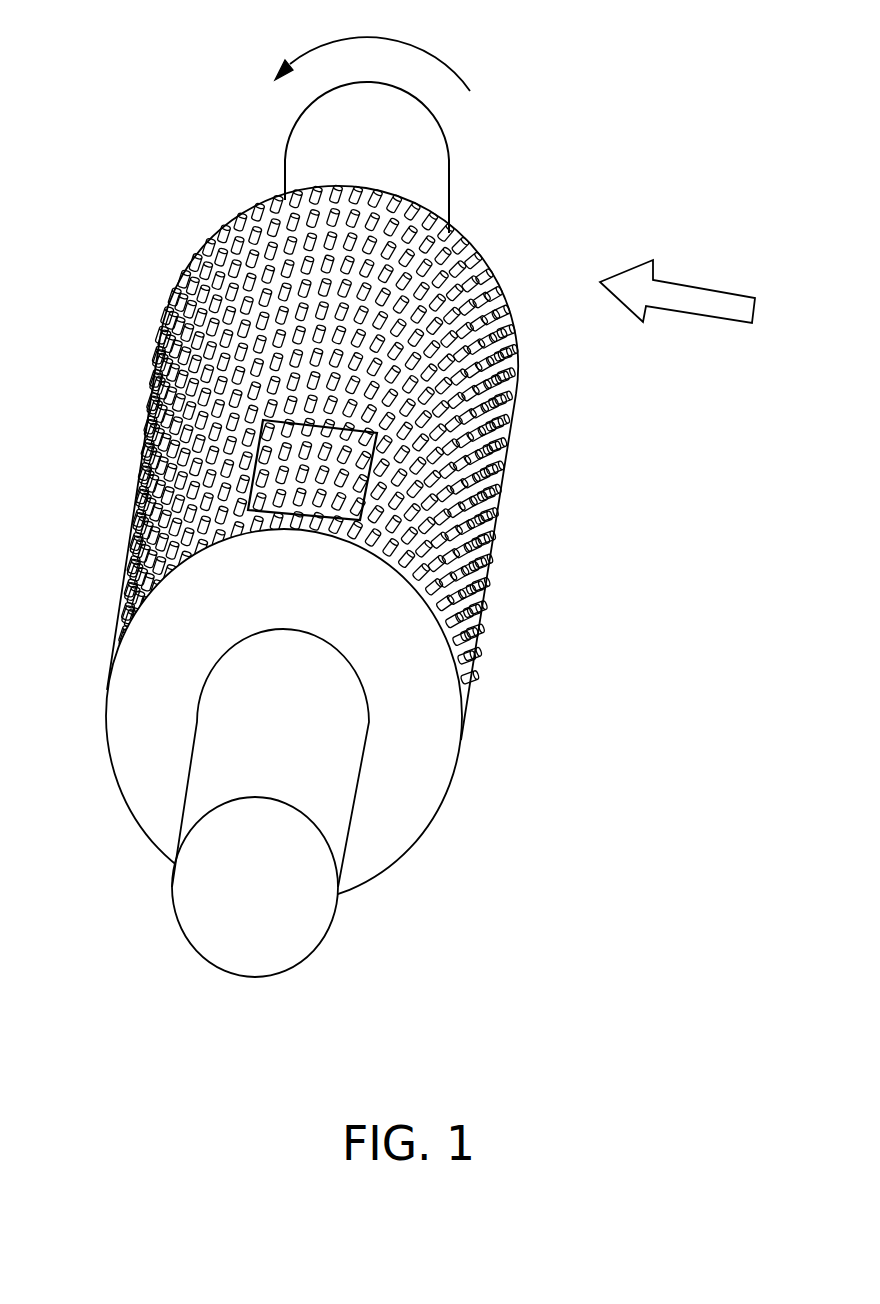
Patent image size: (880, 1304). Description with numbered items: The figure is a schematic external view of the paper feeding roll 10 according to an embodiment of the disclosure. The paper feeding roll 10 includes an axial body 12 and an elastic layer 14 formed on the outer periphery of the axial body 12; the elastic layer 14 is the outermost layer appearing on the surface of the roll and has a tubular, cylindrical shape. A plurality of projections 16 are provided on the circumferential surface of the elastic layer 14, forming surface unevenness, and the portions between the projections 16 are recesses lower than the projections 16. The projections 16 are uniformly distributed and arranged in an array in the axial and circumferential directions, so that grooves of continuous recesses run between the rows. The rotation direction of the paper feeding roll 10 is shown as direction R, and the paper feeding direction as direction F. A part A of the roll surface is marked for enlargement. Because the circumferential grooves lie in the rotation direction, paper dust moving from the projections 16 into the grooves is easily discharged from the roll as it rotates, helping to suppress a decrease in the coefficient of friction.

The paper feeding roll 10 is at (307, 573).
The axial body 12 is at (252, 927).
The elastic layer 14 is at (138, 750).
The projections 16 is at (236, 232).
The part A is at (327, 533).
The direction R is at (372, 49).
The direction F is at (696, 295).